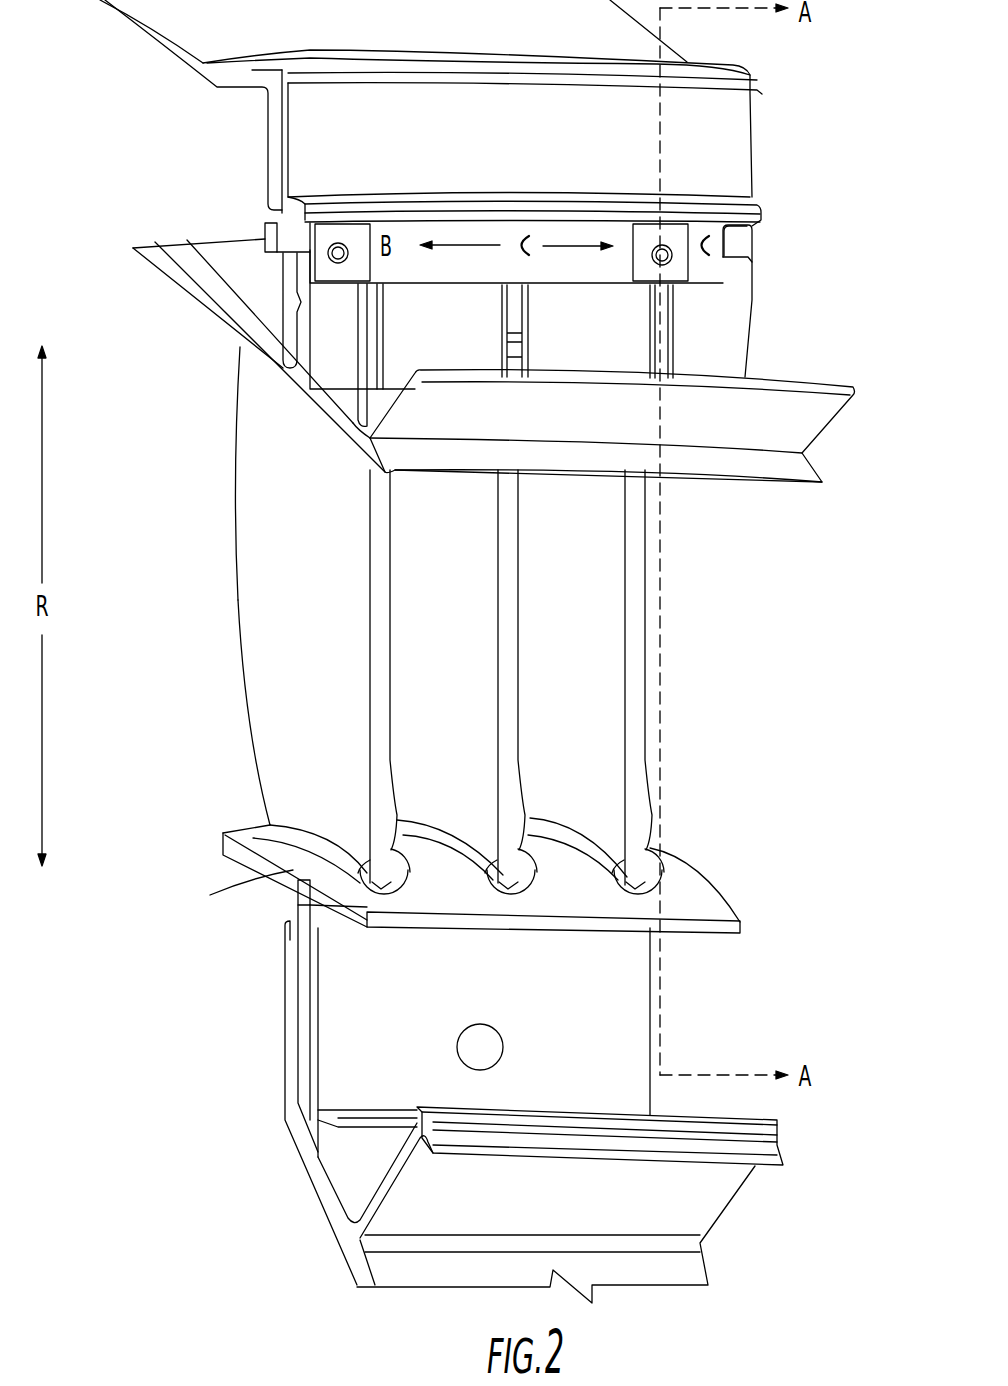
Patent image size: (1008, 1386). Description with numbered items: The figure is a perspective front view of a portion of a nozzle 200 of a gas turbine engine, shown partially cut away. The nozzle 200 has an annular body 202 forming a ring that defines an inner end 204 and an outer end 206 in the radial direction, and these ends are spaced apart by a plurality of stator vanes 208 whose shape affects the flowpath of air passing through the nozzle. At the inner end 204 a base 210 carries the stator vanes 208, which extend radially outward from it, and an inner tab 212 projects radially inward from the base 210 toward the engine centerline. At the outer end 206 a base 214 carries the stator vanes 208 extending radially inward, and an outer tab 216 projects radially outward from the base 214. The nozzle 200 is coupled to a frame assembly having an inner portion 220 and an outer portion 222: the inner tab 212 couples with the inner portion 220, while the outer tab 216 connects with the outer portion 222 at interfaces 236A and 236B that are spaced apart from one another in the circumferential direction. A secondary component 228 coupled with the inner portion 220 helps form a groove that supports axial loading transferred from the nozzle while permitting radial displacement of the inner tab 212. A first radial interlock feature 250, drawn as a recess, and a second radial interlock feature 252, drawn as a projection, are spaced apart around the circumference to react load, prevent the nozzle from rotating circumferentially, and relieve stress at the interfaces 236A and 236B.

The nozzle 200 is at (237, 603).
The annular body 202 is at (290, 757).
The inner end 204 is at (713, 907).
The outer end 206 is at (797, 168).
The stator vanes 208 is at (610, 760).
The base 210 is at (258, 870).
The inner tab 212 is at (308, 947).
The base 214 is at (783, 390).
The outer tab 216 is at (320, 317).
The inner portion 220 is at (700, 1212).
The outer portion 222 is at (203, 55).
The secondary component 228 is at (330, 1127).
The interface 236A is at (328, 247).
The interface 236B is at (655, 245).
The first radial interlock feature 250 is at (733, 247).
The second radial interlock feature 252 is at (265, 243).